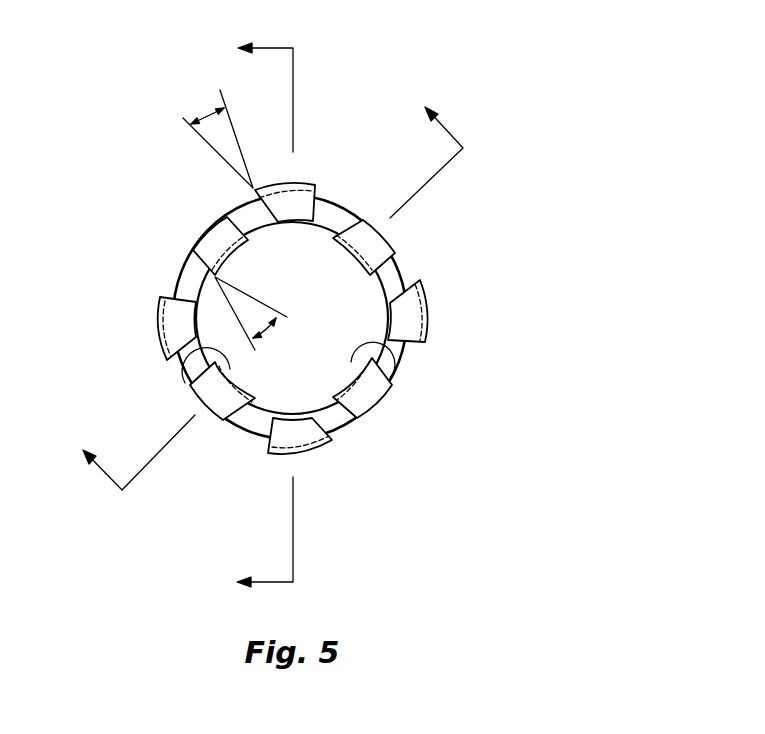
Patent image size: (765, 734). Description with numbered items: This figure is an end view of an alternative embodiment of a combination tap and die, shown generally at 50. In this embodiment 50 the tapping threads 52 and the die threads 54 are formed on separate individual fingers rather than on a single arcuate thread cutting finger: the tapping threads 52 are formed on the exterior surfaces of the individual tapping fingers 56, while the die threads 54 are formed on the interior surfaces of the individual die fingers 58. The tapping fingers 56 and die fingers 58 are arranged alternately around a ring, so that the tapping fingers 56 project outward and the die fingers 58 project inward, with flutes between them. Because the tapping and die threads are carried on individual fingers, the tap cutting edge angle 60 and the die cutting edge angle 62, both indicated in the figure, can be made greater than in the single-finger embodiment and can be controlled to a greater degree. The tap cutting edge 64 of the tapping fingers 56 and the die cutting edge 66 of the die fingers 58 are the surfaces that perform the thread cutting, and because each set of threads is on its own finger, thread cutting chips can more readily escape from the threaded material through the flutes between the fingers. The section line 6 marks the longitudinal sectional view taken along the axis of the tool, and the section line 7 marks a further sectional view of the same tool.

The combination tap and die 50 is at (503, 246).
The tapping threads 52 is at (160, 328).
The die threads 54 is at (183, 385).
The tapping fingers 56 is at (302, 203).
The die fingers 58 is at (218, 246).
The tap cutting edge angle 60 is at (207, 110).
The die cutting edge angle 62 is at (268, 330).
The tap cutting edge 64 is at (248, 210).
The die cutting edge 66 is at (203, 267).
The section line 6- 6 is at (264, 315).
The section line 7- 7 is at (264, 286).